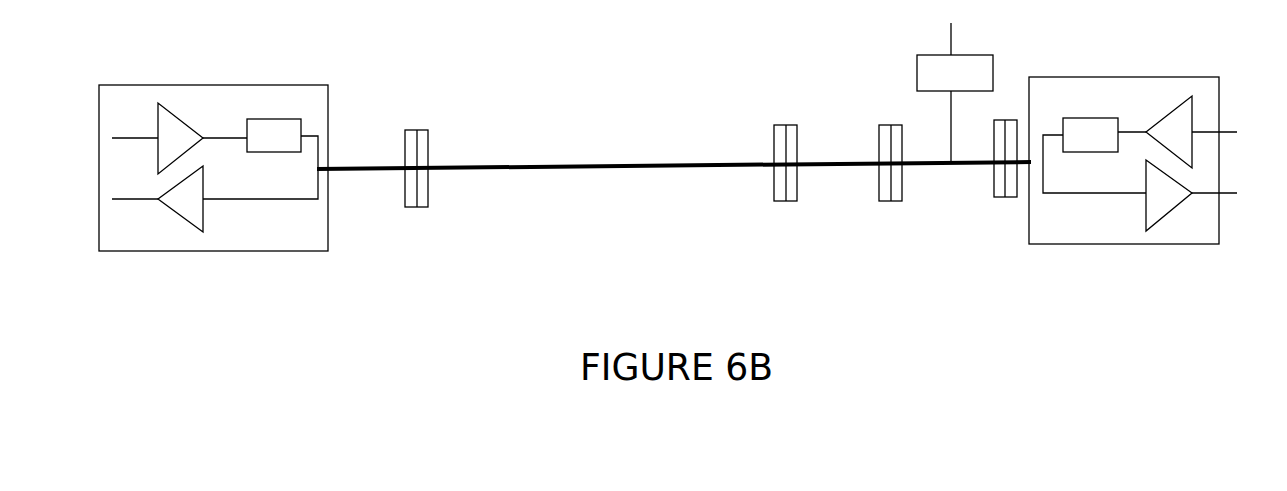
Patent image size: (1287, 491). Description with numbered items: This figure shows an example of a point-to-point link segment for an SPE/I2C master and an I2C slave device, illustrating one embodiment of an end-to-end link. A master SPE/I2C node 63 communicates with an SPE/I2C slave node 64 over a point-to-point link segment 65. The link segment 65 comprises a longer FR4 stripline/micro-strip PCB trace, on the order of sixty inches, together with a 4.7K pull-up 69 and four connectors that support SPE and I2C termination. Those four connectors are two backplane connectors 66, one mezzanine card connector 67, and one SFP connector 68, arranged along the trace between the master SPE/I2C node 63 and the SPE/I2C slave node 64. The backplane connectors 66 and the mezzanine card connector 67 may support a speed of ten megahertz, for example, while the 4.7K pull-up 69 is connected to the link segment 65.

The master SPE/I2C node 63 is at (307, 86).
The SPE/I2C slave node 64 is at (1163, 244).
The point-to-point link segment 65 is at (587, 163).
The backplane connector 66 is at (422, 190).
The mezzanine card connector 67 is at (889, 131).
The SFP connector 68 is at (993, 191).
The 4.7K pull-up 69 is at (928, 62).